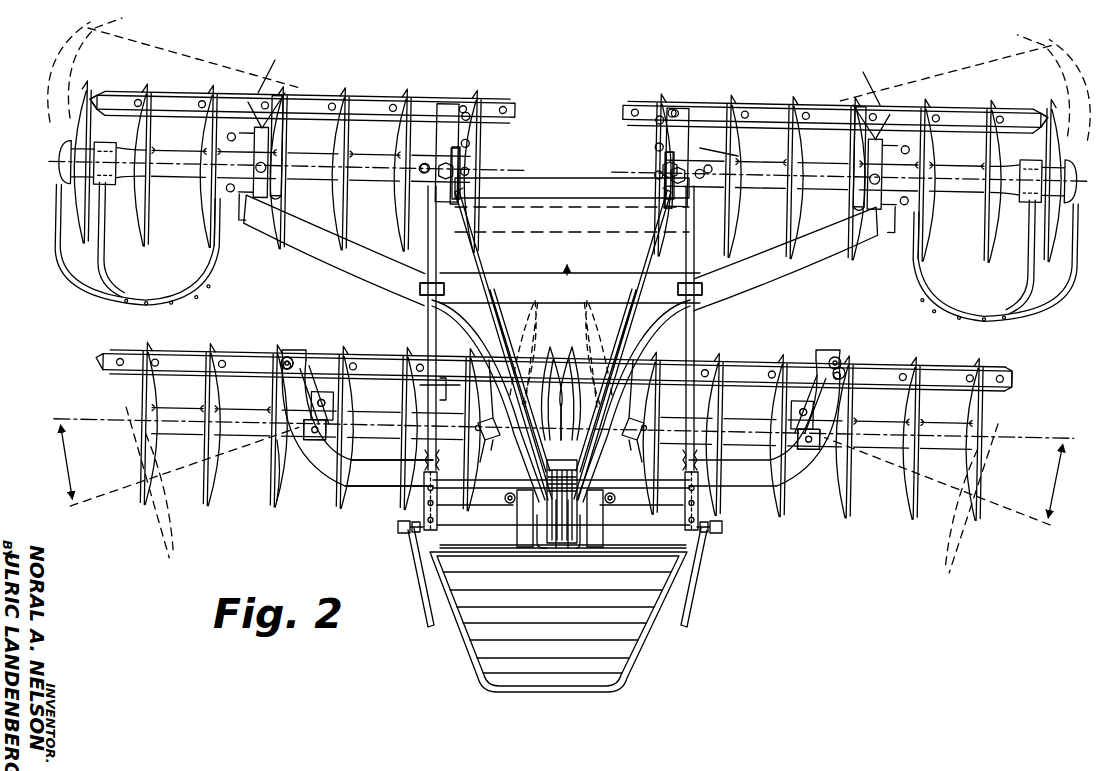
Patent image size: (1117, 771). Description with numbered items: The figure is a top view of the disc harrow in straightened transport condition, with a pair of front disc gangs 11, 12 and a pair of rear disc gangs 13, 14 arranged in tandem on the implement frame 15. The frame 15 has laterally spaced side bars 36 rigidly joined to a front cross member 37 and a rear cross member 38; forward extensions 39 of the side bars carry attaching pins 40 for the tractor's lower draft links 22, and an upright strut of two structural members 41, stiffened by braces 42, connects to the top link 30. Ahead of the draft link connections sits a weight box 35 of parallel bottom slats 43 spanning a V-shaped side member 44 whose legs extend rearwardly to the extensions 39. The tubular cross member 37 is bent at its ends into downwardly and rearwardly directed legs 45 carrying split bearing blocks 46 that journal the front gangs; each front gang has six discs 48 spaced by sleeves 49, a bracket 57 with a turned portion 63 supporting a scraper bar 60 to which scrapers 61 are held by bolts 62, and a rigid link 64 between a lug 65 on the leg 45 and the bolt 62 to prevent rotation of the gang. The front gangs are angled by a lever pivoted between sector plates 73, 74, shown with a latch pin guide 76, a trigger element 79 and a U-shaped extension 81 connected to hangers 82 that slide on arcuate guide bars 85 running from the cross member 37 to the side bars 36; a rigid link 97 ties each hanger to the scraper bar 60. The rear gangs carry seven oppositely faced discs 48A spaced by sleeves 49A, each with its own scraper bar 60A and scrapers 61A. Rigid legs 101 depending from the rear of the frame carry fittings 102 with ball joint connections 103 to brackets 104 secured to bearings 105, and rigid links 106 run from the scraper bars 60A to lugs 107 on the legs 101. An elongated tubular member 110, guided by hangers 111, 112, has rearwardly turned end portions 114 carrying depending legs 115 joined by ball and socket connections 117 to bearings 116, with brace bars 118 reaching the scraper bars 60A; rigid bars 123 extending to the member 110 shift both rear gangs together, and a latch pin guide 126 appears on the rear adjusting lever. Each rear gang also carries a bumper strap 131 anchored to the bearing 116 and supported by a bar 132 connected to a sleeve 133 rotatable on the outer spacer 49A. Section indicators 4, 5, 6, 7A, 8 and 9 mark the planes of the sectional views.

The section line 4- 4 is at (503, 537).
The section line 5- 5 is at (470, 407).
The section line 6- 6 is at (265, 332).
The axle of front disk gang 7A is at (60, 163).
The section line 8- 8 is at (853, 72).
The section line 9- 9 is at (645, 92).
The front disc gang 11 is at (268, 505).
The front disc gang 12 is at (832, 515).
The rear disc gang 13 is at (224, 74).
The rear disc gang 14 is at (795, 90).
The implement frame 15 is at (424, 316).
The draft links 22 is at (410, 604).
The top link 30 is at (562, 580).
The weight box 35 is at (468, 665).
The side bars 36 is at (426, 330).
The front cross member 37 is at (388, 484).
The rear cross member 38 is at (566, 180).
The forward extensions 39 is at (424, 505).
The attaching pins 40 is at (398, 530).
The structural members 41 is at (590, 470).
The braces 42 is at (478, 256).
The bottom slats 43 is at (620, 657).
The V-shaped side member 44 is at (630, 682).
The legs 45 is at (312, 468).
The split bearing blocks 46 is at (322, 416).
The discs 48 is at (238, 492).
The spacing sleeves 49 is at (183, 412).
The bracket 57 is at (316, 402).
The scraper carrying bar 60 is at (185, 356).
The scrapers 61 is at (1000, 375).
The bolts 62 is at (338, 440).
The turned portion 63 is at (292, 352).
The rigid link 64 is at (300, 402).
The lug 65 is at (300, 470).
The sector plate 73 is at (530, 548).
The sector plate 74 is at (596, 548).
The guide 76 is at (505, 496).
The trigger element 79 is at (512, 527).
The U-shaped extension 81 is at (548, 548).
The hangers 82 is at (488, 440).
The arcuate guide bar 85 is at (462, 313).
The rigid link 97 is at (440, 402).
The rigid legs 101 is at (460, 175).
The fitting 102 is at (460, 155).
The ball joint connection 103 is at (700, 168).
The bracket 104 is at (740, 156).
The bearing 105 is at (470, 100).
The rigid link 106 is at (665, 150).
The lug 107 is at (660, 170).
The tubular member 110 is at (524, 275).
The hanger 111 is at (424, 264).
The hanger 112 is at (702, 290).
The end portions 114 is at (327, 250).
The depending leg 115 is at (243, 212).
The bearing 116 is at (228, 135).
The ball and socket connection 117 is at (262, 120).
The brace bar 118 is at (278, 125).
The rigid bars 123 is at (528, 350).
The guide 126 is at (614, 498).
The V-shaped metal strap 131 is at (92, 280).
The bar 132 is at (100, 250).
The sleeve 133 is at (92, 148).
The discs 48A is at (213, 236).
The spacing sleeves 49A is at (168, 180).
The scraper bar 60A is at (420, 100).
The scrapers 61A is at (100, 96).